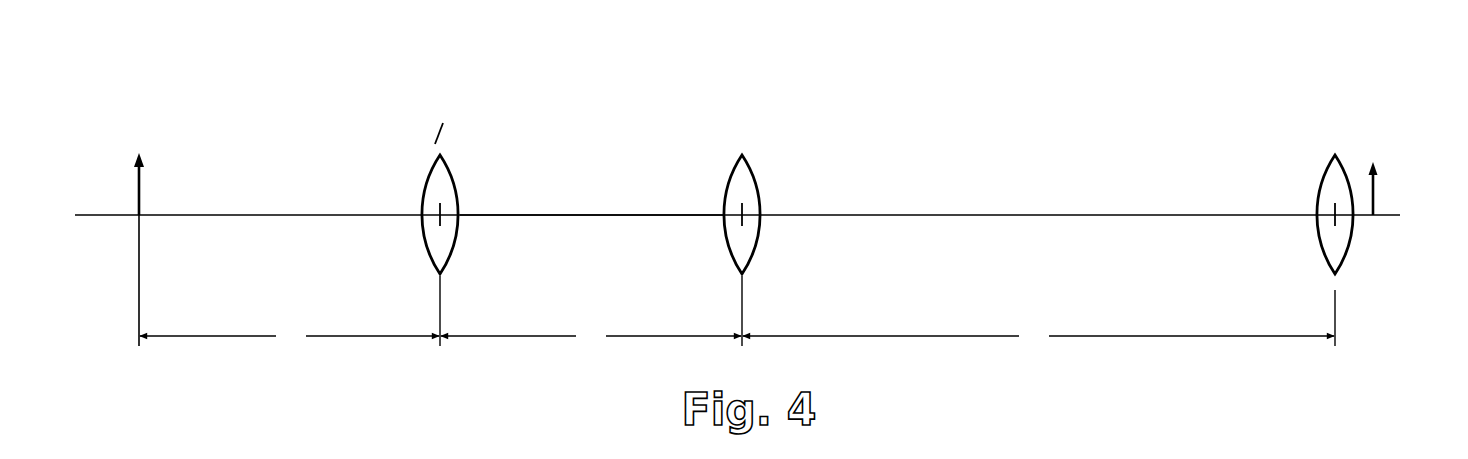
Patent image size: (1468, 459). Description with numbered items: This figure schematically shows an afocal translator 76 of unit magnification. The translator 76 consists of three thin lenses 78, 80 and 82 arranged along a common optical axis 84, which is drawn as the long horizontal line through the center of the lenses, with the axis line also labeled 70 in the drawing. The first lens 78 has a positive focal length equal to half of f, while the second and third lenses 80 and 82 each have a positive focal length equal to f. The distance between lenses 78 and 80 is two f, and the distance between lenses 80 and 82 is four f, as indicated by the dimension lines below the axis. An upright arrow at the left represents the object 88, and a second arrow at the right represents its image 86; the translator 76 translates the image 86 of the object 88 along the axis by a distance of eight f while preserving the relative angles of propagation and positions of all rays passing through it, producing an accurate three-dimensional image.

The optical axis 70 is at (307, 215).
The afocal translator 76 is at (658, 125).
The lens 78 is at (425, 188).
The lens 80 is at (725, 193).
The lens 82 is at (1320, 188).
The common optical axis 84 is at (607, 215).
The image 86 is at (1375, 188).
The object 88 is at (138, 185).